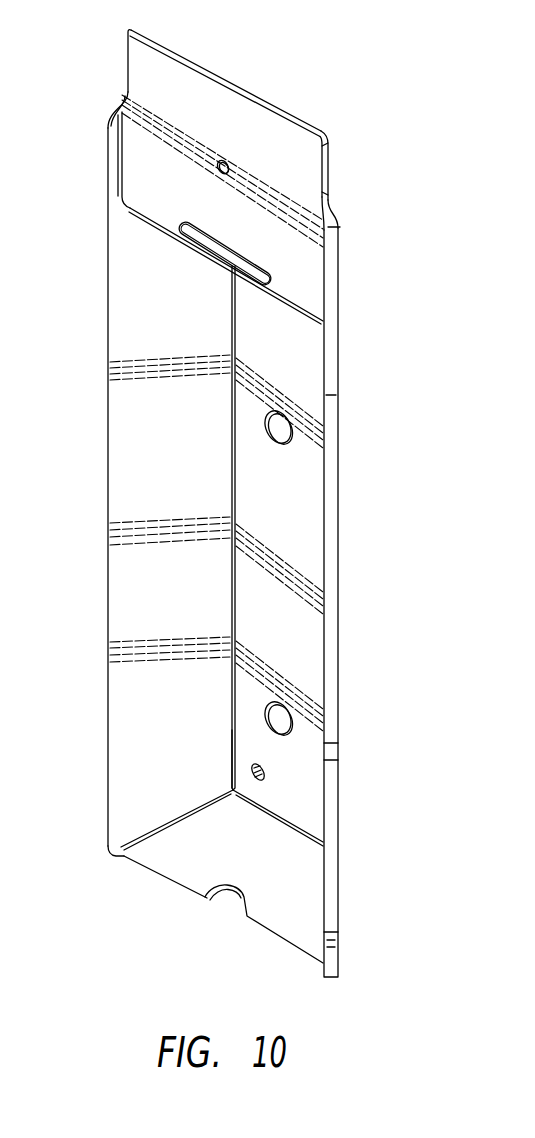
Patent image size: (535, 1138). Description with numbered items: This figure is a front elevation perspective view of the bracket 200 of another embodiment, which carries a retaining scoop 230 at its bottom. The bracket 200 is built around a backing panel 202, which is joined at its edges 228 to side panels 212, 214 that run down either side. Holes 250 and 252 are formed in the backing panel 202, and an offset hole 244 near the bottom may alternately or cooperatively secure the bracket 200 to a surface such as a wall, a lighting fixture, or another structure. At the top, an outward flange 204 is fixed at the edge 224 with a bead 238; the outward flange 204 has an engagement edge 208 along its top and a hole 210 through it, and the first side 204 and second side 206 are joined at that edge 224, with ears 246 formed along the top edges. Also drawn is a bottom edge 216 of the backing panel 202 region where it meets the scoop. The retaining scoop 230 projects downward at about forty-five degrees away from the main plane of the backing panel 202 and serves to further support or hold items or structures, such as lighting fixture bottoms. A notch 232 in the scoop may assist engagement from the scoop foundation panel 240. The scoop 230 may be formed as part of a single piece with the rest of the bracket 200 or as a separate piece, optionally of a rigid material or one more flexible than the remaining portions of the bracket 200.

The bracket 200 is at (285, 44).
The backing panel 202 is at (339, 405).
The outward flange 204 is at (331, 176).
The second side 206 is at (135, 152).
The engagement edge 208 is at (215, 72).
The hole 210 is at (224, 160).
The side panel 212 is at (339, 656).
The side panel 214 is at (128, 498).
The bottom edge 216 is at (318, 823).
The edge 224 is at (271, 288).
The edges 228 is at (233, 737).
The retaining scoop 230 is at (165, 853).
The notch 232 is at (238, 893).
The bead 238 is at (226, 232).
The scoop foundation panel 240 is at (203, 880).
The offset hole 244 is at (258, 783).
The ears 246 is at (113, 123).
The hole 250 is at (271, 700).
The hole 252 is at (284, 446).